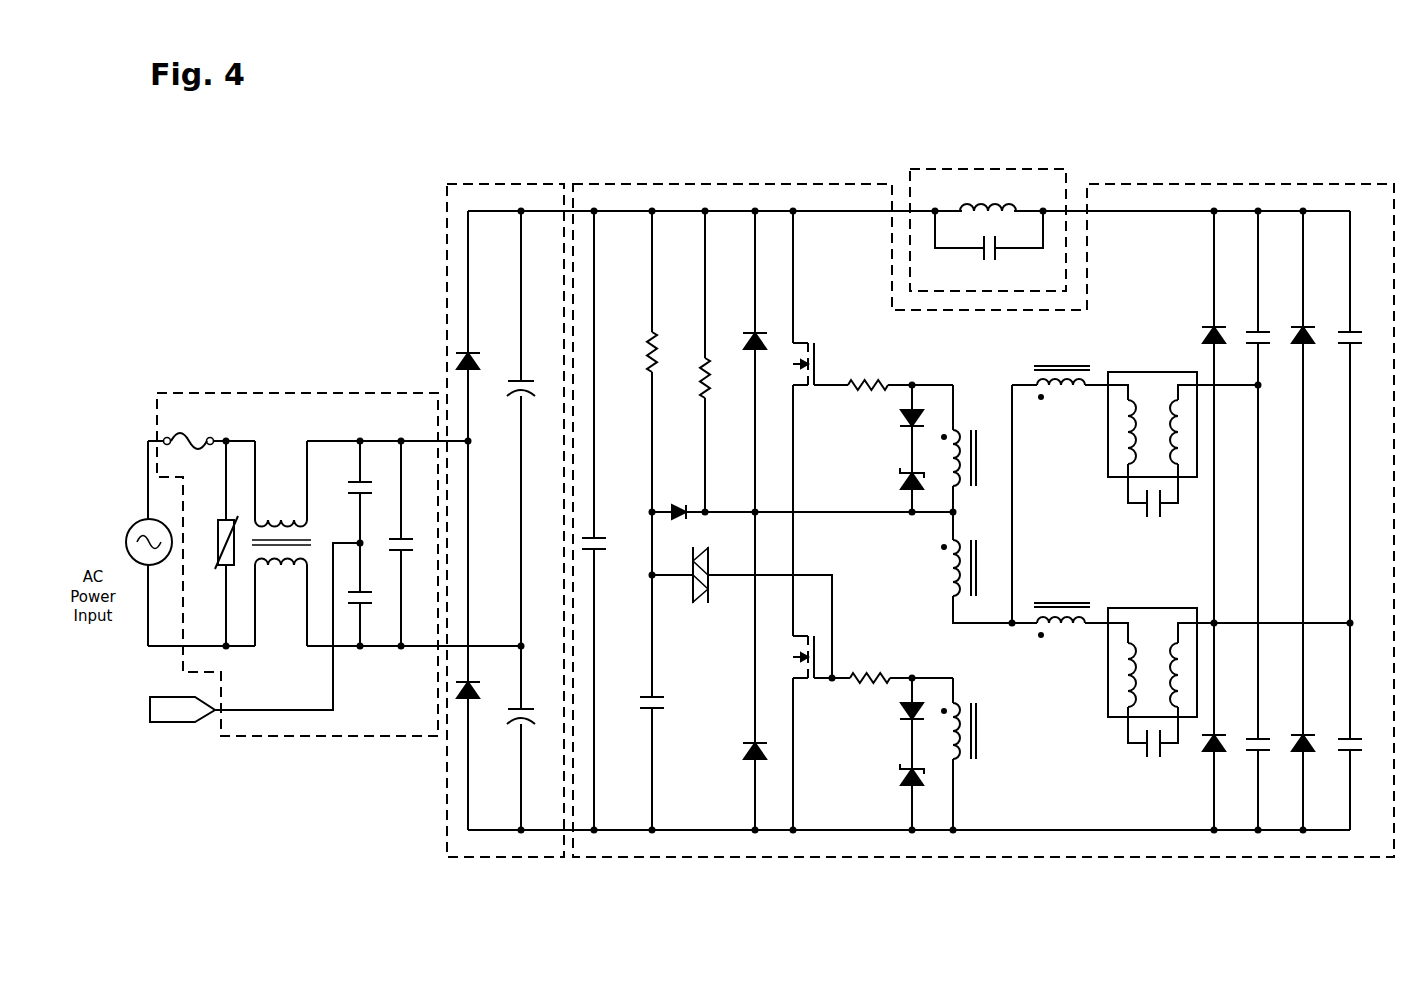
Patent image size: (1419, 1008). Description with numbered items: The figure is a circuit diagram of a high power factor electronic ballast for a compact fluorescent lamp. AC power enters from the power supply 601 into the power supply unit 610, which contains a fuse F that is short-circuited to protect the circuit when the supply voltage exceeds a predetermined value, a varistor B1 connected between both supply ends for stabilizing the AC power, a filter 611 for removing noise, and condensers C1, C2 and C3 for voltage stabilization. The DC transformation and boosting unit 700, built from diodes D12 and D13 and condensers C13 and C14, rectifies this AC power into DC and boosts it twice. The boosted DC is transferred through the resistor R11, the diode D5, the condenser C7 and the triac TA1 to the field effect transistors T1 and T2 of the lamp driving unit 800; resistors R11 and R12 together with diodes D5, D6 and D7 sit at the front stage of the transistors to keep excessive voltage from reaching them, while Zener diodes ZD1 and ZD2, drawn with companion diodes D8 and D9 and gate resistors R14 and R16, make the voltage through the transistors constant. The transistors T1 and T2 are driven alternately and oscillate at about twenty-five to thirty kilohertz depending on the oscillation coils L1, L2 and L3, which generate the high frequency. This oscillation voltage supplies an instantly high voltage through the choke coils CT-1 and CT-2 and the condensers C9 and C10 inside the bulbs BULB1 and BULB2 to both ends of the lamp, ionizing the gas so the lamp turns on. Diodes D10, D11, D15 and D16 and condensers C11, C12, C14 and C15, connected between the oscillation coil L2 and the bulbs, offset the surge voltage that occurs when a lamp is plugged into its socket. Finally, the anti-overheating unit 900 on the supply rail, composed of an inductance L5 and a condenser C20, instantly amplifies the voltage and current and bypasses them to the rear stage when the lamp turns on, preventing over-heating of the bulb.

The power supply 601 is at (141, 520).
The power supply unit 610 is at (281, 393).
The filter 611 is at (282, 518).
The DC transformation and boosting unit 700 is at (529, 184).
The lamp driving unit 800 is at (732, 184).
The anti-overheating unit 900 is at (987, 169).
The fuse F is at (189, 428).
The varistor B1 is at (216, 543).
The condenser C1 is at (368, 492).
The condenser C2 is at (368, 594).
The condenser C3 is at (408, 543).
The diode D12 is at (482, 351).
The diode D13 is at (482, 678).
The condenser C13 is at (531, 428).
The condenser C14 is at (947, 520).
The condenser C12 is at (938, 520).
The resistor R11 is at (667, 454).
The resistor R12 is at (721, 361).
The condenser C7 is at (666, 761).
The diode D5 is at (802, 499).
The diode D6 is at (762, 477).
The diode D7 is at (765, 775).
The triac TA1 is at (742, 612).
The field effect transistor T1 is at (807, 353).
The field effect transistor T2 is at (807, 644).
The resistor R14 is at (883, 375).
The resistor R16 is at (883, 667).
The diode D8 is at (896, 429).
The diode D9 is at (897, 723).
The Zener diode ZD1 is at (892, 490).
The Zener diode ZD2 is at (892, 797).
The oscillation coil L1 is at (970, 448).
The oscillation coil L2 is at (976, 567).
The oscillation coil L3 is at (970, 754).
The inductance L5 is at (988, 194).
The condenser C20 is at (989, 246).
The choke coil CT-1 is at (1060, 371).
The choke coil CT-2 is at (1060, 608).
The bulb BULB1 is at (1153, 385).
The bulb BULB2 is at (1153, 623).
The condenser C9 is at (1153, 514).
The condenser C10 is at (1153, 754).
The diode D10 is at (1227, 473).
The diode D11 is at (1227, 771).
The diode D15 is at (1315, 473).
The diode D16 is at (1315, 771).
The condenser C11 is at (1270, 325).
The condenser C15 is at (1363, 731).